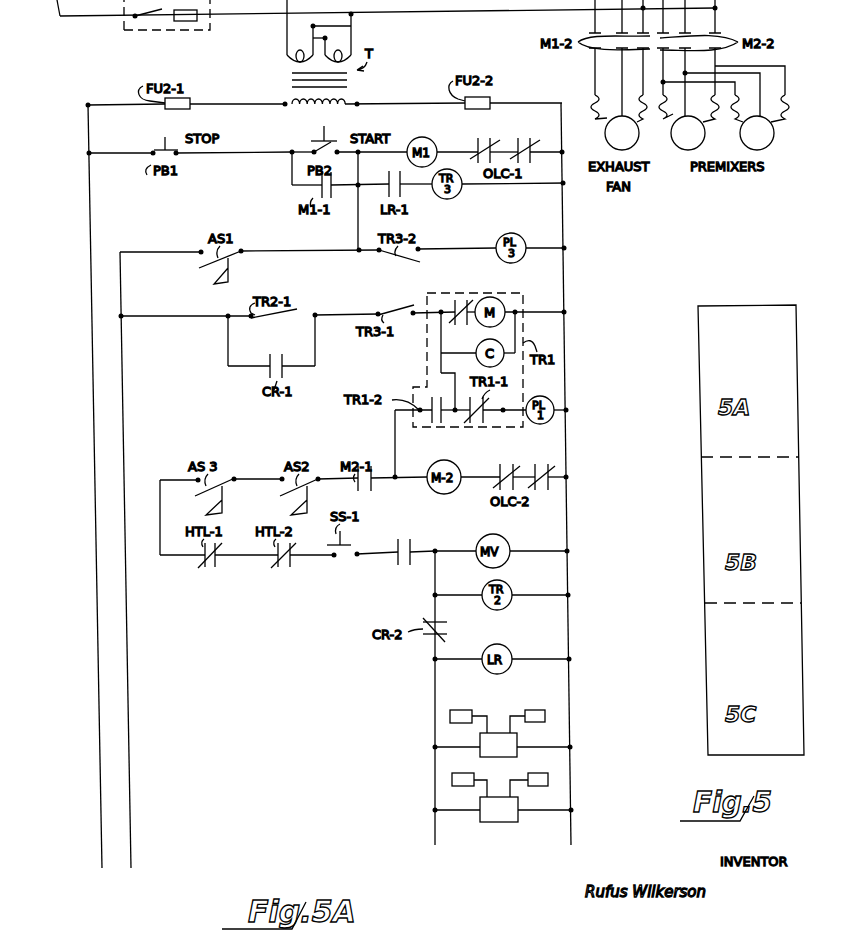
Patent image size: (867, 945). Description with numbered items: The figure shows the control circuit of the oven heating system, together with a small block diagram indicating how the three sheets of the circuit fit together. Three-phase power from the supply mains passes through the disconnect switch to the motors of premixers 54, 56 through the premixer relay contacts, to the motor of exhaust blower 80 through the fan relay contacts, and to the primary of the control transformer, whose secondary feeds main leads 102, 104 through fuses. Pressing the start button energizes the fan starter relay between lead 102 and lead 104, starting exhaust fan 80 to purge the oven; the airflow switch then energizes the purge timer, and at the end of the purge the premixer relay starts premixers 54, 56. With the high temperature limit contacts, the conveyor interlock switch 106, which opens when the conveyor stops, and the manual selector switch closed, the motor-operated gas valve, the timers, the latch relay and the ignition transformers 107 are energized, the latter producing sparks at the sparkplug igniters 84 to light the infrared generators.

The main lead 102 is at (88, 134).
The main lead 104 is at (561, 113).
The conveyor interlock switch 106 is at (390, 546).
The ignition transformers 107 is at (499, 777).
The sparkplug igniters 84 is at (450, 716).
The exhaust blower 80 is at (622, 133).
The premixer 54 is at (688, 133).
The premixer 56 is at (757, 133).